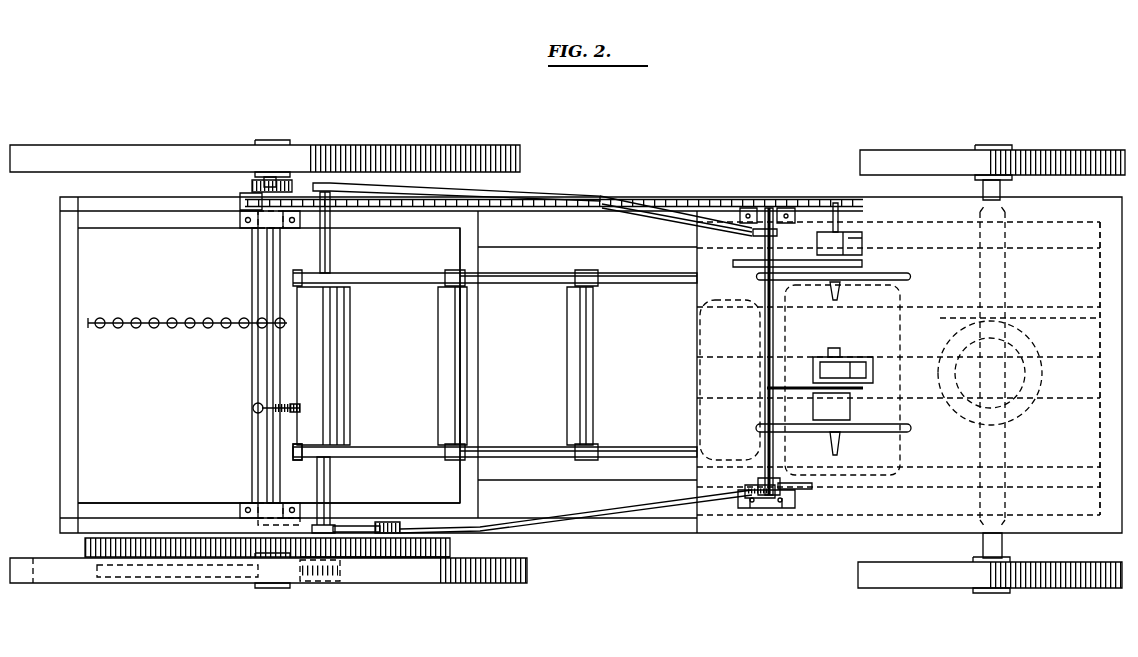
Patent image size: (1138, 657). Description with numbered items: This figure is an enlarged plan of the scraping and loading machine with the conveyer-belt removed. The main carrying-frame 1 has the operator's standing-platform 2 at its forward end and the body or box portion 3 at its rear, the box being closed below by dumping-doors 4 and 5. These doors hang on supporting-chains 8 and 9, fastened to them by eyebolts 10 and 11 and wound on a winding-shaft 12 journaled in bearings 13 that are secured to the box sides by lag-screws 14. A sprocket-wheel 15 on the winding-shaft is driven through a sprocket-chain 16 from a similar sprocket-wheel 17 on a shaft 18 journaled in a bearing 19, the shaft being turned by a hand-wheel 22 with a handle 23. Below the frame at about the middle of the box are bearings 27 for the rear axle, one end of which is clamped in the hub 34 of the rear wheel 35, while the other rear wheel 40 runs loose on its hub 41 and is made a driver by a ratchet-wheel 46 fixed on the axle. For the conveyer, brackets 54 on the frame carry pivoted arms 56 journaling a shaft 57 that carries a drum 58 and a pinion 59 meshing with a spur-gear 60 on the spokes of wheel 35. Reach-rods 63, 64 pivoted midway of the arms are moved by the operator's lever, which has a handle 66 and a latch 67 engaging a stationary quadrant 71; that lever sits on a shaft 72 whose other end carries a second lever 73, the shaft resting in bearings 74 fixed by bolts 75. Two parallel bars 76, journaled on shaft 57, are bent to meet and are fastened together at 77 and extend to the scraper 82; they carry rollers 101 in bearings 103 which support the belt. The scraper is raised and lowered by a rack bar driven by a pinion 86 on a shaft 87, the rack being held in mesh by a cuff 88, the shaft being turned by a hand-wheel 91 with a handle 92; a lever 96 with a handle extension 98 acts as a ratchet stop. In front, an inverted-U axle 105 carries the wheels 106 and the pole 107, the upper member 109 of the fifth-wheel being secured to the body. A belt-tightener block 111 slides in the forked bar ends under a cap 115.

The main carrying-frame 1 is at (660, 530).
The operator's standing-platform 2 is at (898, 366).
The body or box portion 3 is at (103, 507).
The dumping-door 4 is at (422, 365).
The dumping-door 5 is at (269, 365).
The supporting-chain 8 is at (275, 412).
The supporting-chain 9 is at (200, 320).
The eyebolt 10 is at (300, 408).
The eyebolt 11 is at (92, 320).
The winding-shaft 12 is at (266, 380).
The bearing 13 is at (248, 506).
The lag-screw 14 is at (250, 230).
The sprocket-wheel 15 is at (250, 200).
The sprocket-chain 16 is at (680, 200).
The sprocket-wheel 17 is at (850, 200).
The shaft 18 is at (840, 228).
The bearing 19 is at (818, 240).
The hand-wheel 22 is at (912, 277).
The handle 23 is at (828, 290).
The bearing 27 is at (250, 515).
The hub 34 is at (258, 584).
The rear wheel 35 is at (480, 585).
The rear wheel 40 is at (265, 158).
The hub 41 is at (275, 144).
The ratchet-wheel 46 is at (290, 180).
The bracket 54 is at (397, 522).
The arm 56 is at (340, 525).
The shaft 57 is at (330, 490).
The drum 58 is at (323, 366).
The pinion 59 is at (320, 583).
The spur-gear 60 is at (452, 548).
The reach-rod 63 is at (662, 512).
The reach-rod 64 is at (530, 199).
The handle 66 is at (745, 490).
The latch 67 is at (760, 478).
The stationary quadrant 71 is at (814, 486).
The shaft 72 is at (766, 325).
The lever 73 is at (760, 235).
The bearing 74 is at (797, 496).
The bolt 75 is at (782, 502).
The parallel bar 76 is at (528, 456).
The fastening point 77 is at (800, 380).
The scraper 82 is at (1010, 420).
The pinion 86 is at (816, 362).
The shaft 87 is at (827, 350).
The cuff 88 is at (875, 370).
The hand-wheel 91 is at (900, 431).
The handle 92 is at (828, 447).
The lever 96 is at (865, 265).
The extension 98 is at (800, 390).
The roller 101 is at (592, 378).
The bearing 103 is at (592, 460).
The axle 105 is at (1004, 548).
The wheel 106 is at (991, 369).
The pole 107 is at (1085, 360).
The upper member of fifth-wheel 109 is at (1040, 335).
The block 111 is at (325, 457).
The cap 115 is at (297, 460).